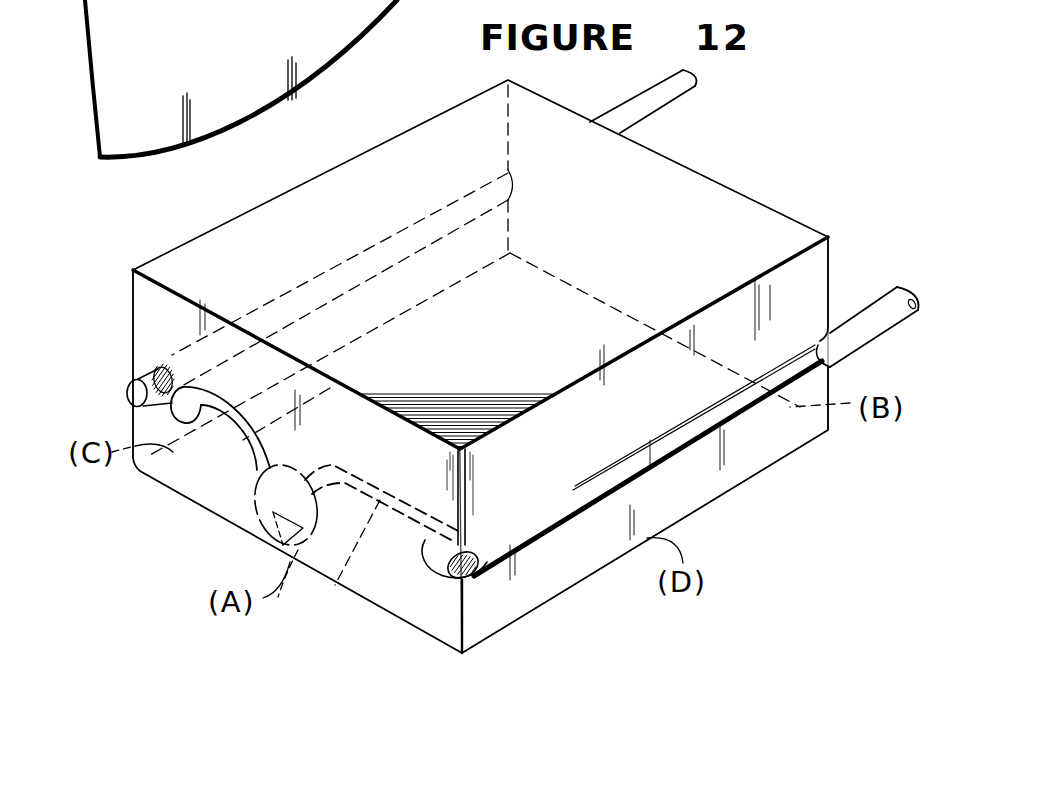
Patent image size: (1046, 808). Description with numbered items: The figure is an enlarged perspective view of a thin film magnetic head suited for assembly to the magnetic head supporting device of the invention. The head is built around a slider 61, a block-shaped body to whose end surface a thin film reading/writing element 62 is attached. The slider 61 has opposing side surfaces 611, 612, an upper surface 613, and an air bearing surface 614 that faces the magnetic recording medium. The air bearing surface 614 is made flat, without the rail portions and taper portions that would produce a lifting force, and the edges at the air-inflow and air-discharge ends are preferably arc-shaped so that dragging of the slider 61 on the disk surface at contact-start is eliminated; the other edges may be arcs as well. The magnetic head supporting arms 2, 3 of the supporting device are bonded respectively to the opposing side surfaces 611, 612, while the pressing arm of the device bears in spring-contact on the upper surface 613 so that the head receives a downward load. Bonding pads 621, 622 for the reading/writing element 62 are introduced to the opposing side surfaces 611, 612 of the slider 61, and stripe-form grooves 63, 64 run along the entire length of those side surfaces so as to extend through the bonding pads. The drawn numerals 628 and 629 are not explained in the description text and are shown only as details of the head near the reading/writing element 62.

The magnetic head supporting arm 2 is at (660, 100).
The magnetic head supporting arm 3 is at (873, 300).
The slider 61 is at (720, 240).
The side surface 611 is at (190, 318).
The side surface 612 is at (677, 452).
The upper surface 613 is at (673, 205).
The air bearing surface 614 is at (707, 452).
The thin film reading/writing element 62 is at (252, 491).
The bonding pad 621 is at (145, 372).
The bonding pad 622 is at (493, 552).
The tube bulge 628 is at (167, 482).
The hidden tube portion 629 is at (335, 585).
The groove 63 is at (140, 394).
The groove 64 is at (790, 407).